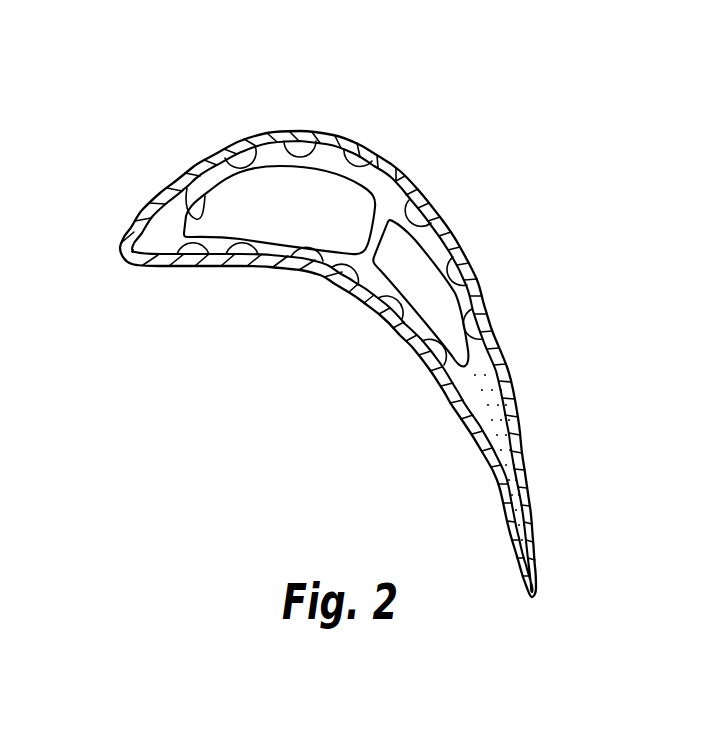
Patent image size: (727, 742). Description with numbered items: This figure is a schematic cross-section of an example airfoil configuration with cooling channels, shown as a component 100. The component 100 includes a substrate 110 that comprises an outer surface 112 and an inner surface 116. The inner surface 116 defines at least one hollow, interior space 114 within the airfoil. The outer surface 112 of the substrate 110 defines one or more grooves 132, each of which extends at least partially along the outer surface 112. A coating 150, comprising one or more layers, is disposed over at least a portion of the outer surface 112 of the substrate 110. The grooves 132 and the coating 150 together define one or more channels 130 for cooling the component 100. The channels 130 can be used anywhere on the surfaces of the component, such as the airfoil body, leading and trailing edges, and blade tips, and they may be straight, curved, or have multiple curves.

The component 100 is at (519, 141).
The substrate 110 is at (393, 185).
The outer surface 112 is at (488, 400).
The hollow, interior space 114 is at (320, 200).
The inner surface 116 is at (199, 210).
The channels 130 is at (253, 140).
The grooves 132 is at (394, 308).
The coating 150 is at (465, 273).